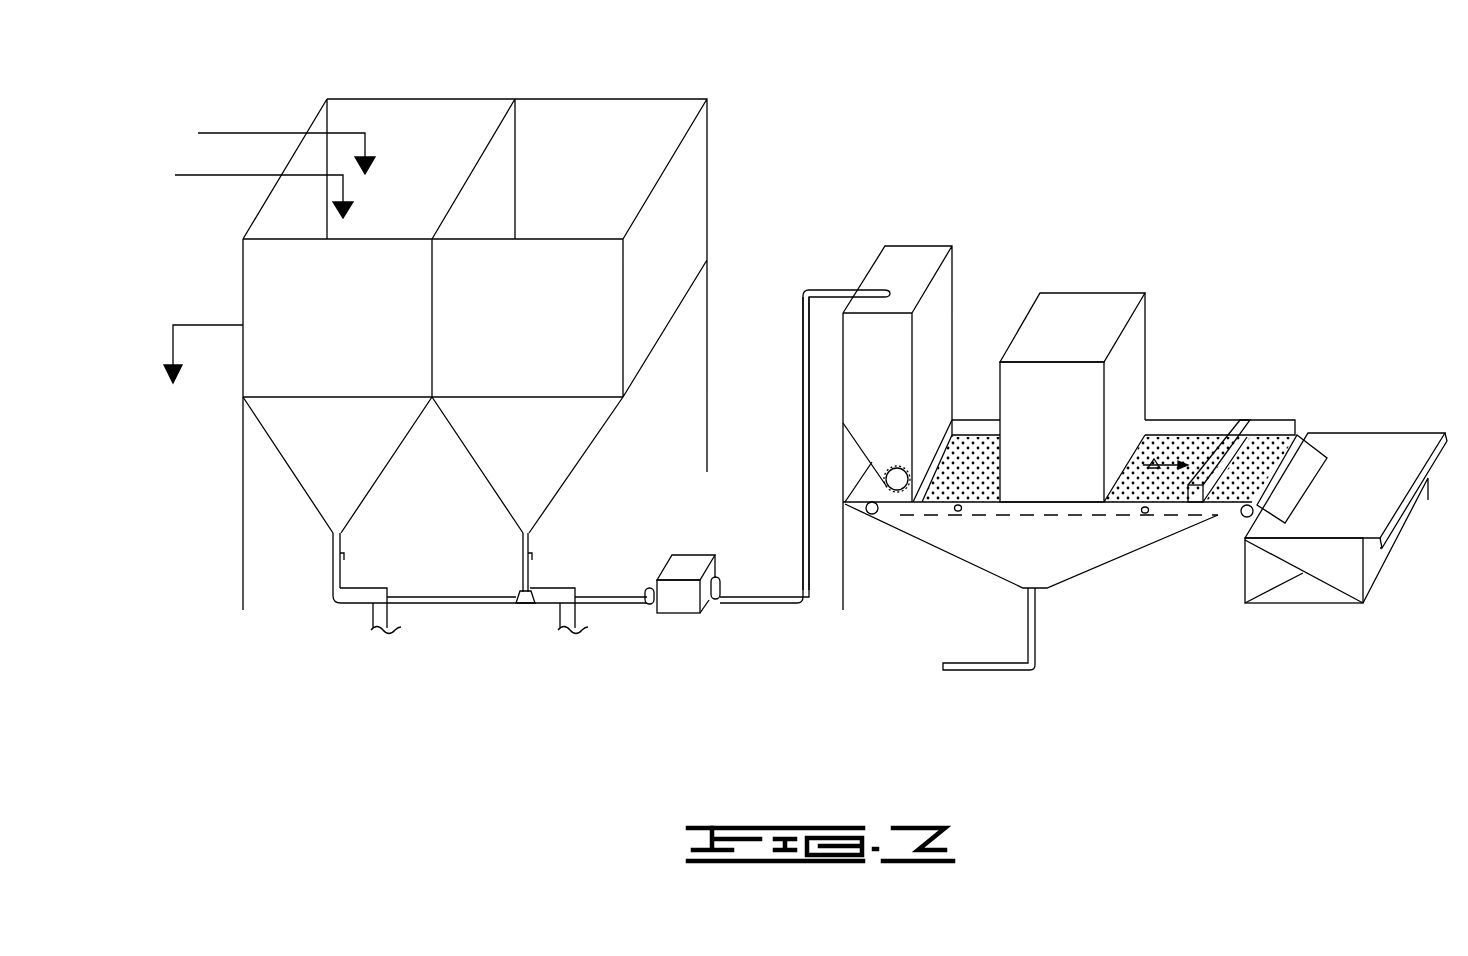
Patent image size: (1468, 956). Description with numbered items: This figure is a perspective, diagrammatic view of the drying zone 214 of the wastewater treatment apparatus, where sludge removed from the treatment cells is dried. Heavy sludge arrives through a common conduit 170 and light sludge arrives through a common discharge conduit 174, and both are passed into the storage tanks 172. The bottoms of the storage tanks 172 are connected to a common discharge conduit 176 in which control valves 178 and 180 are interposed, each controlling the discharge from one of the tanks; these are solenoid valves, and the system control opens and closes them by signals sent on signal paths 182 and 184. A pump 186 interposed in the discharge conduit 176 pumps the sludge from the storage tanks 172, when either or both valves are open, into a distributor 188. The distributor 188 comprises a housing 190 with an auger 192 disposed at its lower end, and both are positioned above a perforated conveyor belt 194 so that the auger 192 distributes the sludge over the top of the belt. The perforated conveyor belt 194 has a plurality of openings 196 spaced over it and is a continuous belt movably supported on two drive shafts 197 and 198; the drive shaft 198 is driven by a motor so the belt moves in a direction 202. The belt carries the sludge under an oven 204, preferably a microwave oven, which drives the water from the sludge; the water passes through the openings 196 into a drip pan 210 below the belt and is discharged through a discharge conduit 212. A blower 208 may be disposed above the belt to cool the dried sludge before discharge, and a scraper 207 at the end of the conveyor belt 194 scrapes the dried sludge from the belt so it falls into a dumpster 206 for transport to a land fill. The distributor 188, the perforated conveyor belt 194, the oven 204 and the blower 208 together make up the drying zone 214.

The common conduit 170 is at (243, 176).
The storage tanks 172 is at (476, 88).
The common discharge conduit 174 is at (265, 133).
The discharge conduit 176 is at (602, 605).
The control valve 178 is at (333, 588).
The control valve 180 is at (518, 597).
The signal path 182 is at (371, 588).
The signal path 184 is at (558, 588).
The pump 186 is at (685, 567).
The distributor 188 is at (868, 252).
The housing 190 is at (910, 250).
The auger 192 is at (892, 492).
The perforated conveyor belt 194 is at (1176, 428).
The openings 196 is at (973, 442).
The drive shaft 197 is at (872, 514).
The drive shaft 198 is at (1246, 517).
The direction 202 is at (1165, 480).
The oven 204 is at (1072, 303).
The dumpster 206 is at (1375, 417).
The scraper 207 is at (1298, 490).
The blower 208 is at (1231, 415).
The drip pan 210 is at (970, 570).
The discharge conduit 212 is at (980, 670).
The drying zone 214 is at (1238, 200).